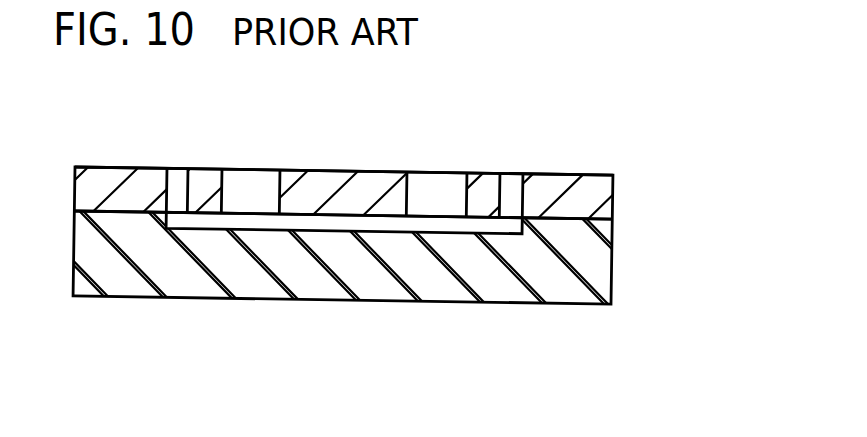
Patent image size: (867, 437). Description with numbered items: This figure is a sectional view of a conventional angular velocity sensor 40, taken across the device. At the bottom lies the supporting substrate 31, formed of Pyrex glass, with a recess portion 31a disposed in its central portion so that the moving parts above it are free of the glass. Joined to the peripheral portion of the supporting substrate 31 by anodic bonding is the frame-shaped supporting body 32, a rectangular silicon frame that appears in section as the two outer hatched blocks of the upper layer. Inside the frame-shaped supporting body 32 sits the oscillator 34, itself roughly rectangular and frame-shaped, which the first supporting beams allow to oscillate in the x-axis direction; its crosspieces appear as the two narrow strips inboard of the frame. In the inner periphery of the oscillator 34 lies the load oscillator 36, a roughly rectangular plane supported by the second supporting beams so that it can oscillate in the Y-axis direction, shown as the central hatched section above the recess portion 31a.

The angular velocity sensor 40 is at (603, 166).
The supporting substrate 31 is at (614, 263).
The recess portion 31a is at (425, 232).
The frame-shaped supporting body 32 is at (101, 170).
The oscillator 34 is at (213, 168).
The load oscillator 36 is at (345, 170).